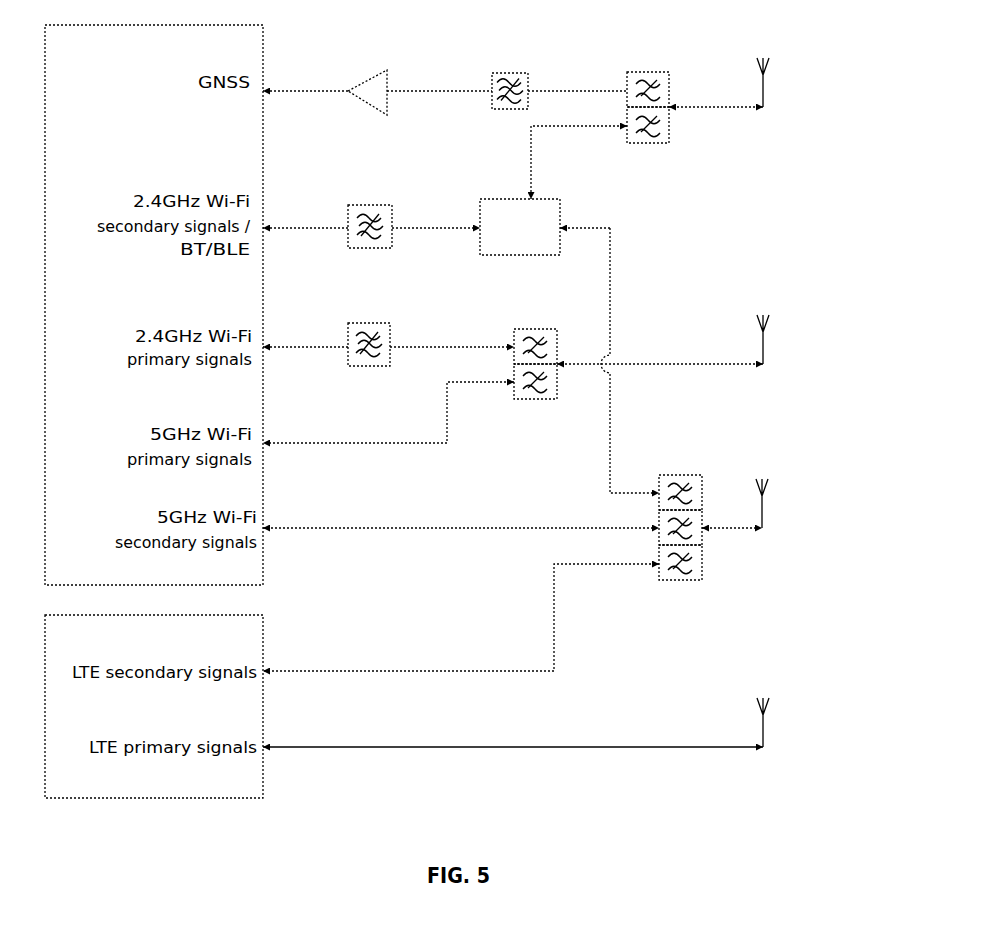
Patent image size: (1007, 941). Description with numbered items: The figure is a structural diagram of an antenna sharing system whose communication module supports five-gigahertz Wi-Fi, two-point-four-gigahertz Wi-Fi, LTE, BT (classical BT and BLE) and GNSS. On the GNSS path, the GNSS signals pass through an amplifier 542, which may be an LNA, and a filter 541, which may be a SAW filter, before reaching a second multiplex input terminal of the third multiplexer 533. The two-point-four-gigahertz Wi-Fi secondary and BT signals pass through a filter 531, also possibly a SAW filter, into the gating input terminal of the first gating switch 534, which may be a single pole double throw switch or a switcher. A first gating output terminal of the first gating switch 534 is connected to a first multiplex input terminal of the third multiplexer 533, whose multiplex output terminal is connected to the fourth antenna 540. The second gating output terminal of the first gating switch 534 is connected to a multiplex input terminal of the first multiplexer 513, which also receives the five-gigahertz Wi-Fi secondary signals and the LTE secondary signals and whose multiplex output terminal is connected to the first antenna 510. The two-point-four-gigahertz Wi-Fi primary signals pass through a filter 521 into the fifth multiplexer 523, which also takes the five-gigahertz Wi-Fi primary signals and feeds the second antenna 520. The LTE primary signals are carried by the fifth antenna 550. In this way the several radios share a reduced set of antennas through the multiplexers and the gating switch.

The first antenna 510 is at (765, 505).
The first multiplexer 513 is at (678, 475).
The second antenna 520 is at (767, 343).
The filter 521 is at (370, 322).
The fifth multiplexer 523 is at (540, 329).
The filter 531 is at (377, 203).
The third multiplexer 533 is at (653, 72).
The first gating switch 534 is at (515, 197).
The fourth antenna 540 is at (765, 88).
The filter 541 is at (508, 72).
The amplifier 542 is at (366, 80).
The fifth antenna 550 is at (767, 733).